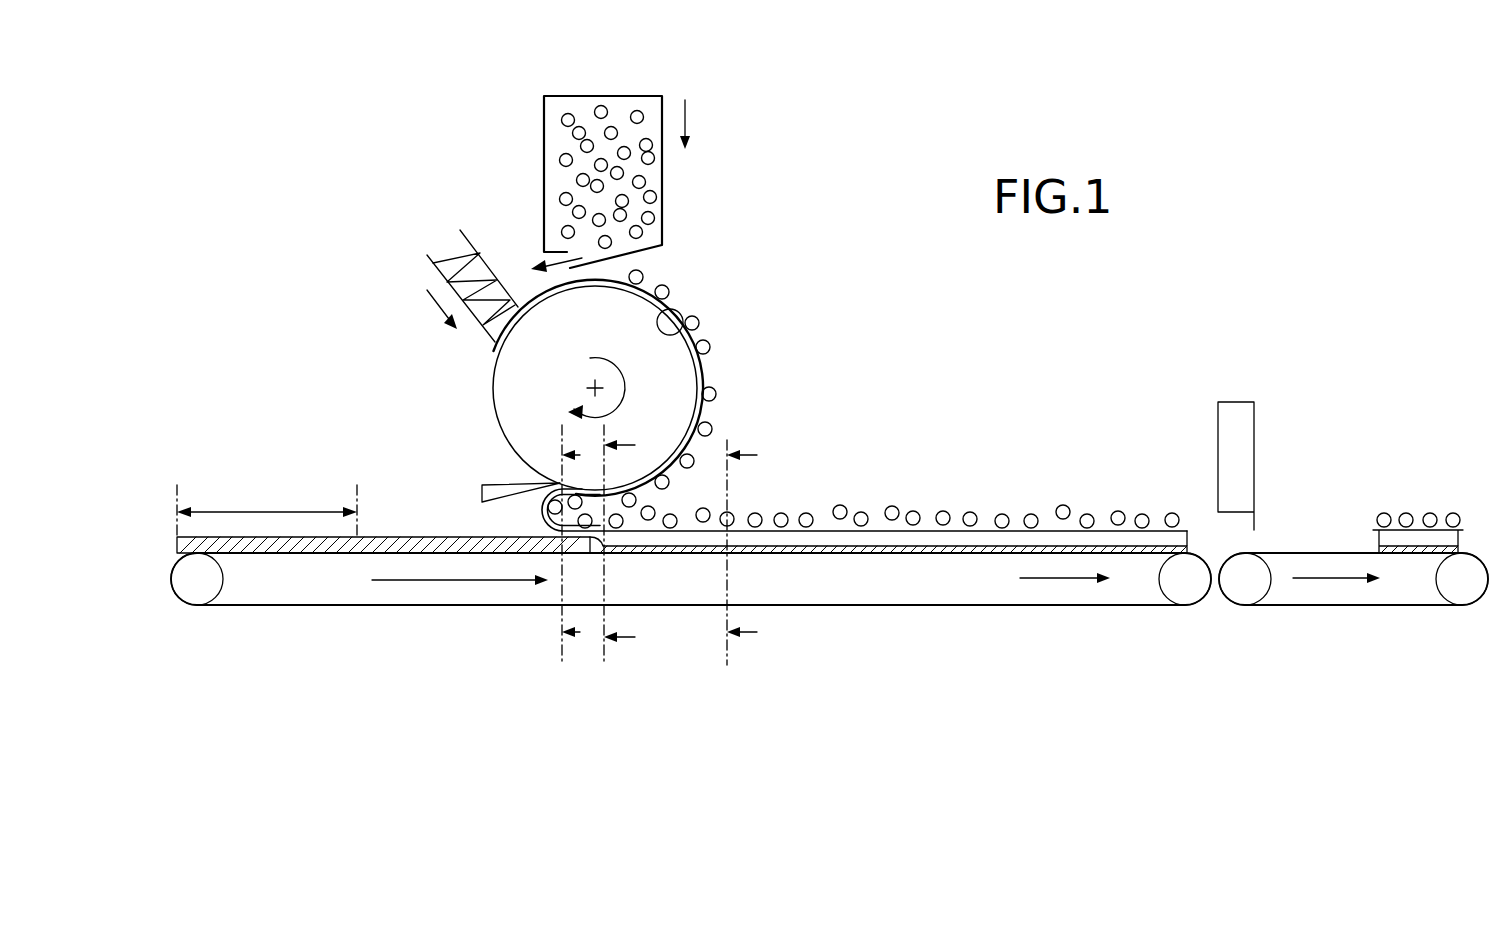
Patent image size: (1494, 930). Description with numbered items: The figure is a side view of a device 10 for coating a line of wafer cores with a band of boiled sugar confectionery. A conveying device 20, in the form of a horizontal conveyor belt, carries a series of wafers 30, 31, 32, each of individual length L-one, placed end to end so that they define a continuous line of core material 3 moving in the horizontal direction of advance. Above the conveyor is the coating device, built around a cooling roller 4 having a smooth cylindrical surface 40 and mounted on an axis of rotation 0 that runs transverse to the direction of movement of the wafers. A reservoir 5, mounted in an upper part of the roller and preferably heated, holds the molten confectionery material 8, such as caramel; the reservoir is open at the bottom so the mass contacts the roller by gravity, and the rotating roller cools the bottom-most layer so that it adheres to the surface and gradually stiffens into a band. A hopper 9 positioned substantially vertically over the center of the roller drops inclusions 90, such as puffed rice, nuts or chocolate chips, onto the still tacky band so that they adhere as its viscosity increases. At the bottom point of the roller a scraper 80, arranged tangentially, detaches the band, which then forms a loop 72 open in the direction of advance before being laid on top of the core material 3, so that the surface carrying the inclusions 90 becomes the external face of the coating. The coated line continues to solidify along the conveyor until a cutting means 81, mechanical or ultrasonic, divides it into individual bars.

The hopper 9 is at (648, 84).
The device 10 is at (308, 307).
The cooling roller 4 is at (478, 369).
The axis of rotation 0 is at (595, 387).
The confectionery material 8 is at (433, 262).
The reservoir 5 is at (426, 277).
The cylindrical surface 40 is at (680, 310).
The inclusions 90 is at (712, 343).
The scraper 80 is at (492, 498).
The loop 72 is at (542, 497).
The core material 3 is at (384, 430).
The wafer 30 is at (213, 535).
The wafer 31 is at (380, 535).
The wafer 32 is at (555, 552).
The conveying device 20 is at (160, 587).
The cutting means 81 is at (1208, 462).